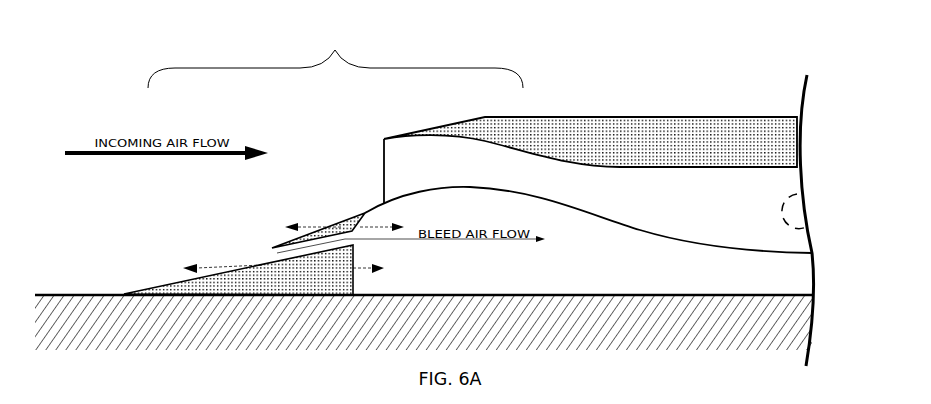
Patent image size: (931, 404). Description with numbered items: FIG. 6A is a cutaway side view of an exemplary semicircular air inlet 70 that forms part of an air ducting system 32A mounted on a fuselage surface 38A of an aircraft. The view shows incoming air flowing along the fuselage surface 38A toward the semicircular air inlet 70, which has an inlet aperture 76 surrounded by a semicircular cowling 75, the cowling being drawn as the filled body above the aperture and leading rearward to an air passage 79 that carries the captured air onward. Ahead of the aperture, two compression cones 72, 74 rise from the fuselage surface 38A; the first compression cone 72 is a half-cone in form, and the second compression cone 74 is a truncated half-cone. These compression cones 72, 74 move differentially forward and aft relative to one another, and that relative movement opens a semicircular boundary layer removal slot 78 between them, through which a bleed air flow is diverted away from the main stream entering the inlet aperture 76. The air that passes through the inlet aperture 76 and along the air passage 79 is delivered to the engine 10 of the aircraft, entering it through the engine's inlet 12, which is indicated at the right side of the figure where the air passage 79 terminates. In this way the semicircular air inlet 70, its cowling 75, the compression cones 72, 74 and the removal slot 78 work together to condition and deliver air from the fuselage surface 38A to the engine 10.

The turbojet engine 10 is at (795, 208).
The inlet 12 is at (792, 239).
The air ducting system 32A is at (604, 78).
The fuselage surface 38A is at (103, 294).
The semicircular air inlet 70 is at (335, 57).
The compression cone 72 is at (313, 297).
The compression cone 74 is at (352, 216).
The semicircular cowling 75 is at (466, 127).
The inlet aperture 76 is at (393, 172).
The semicircular boundary layer removal slot 78 is at (253, 249).
The air passage 79 is at (640, 202).